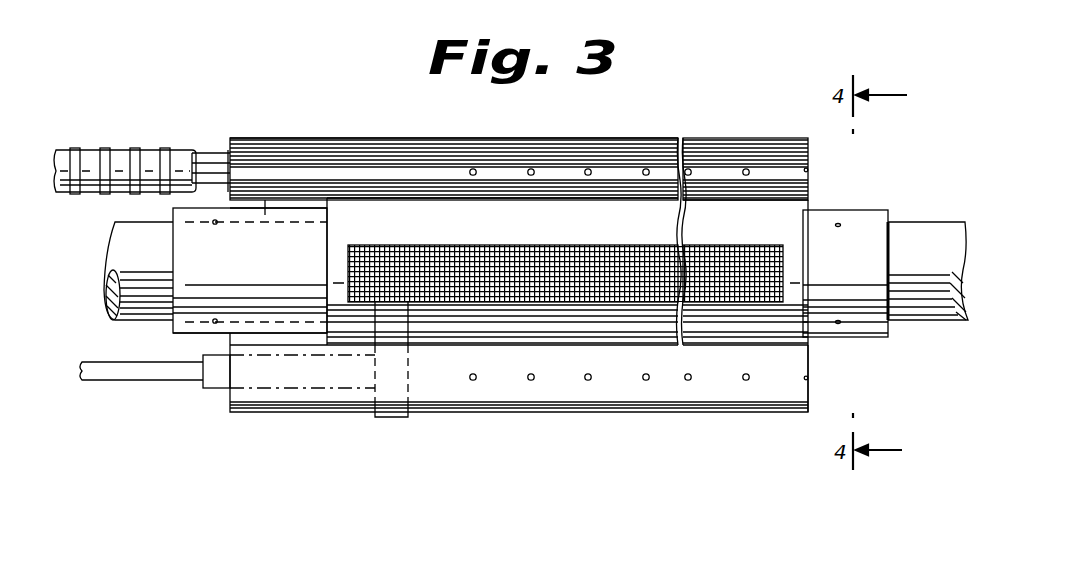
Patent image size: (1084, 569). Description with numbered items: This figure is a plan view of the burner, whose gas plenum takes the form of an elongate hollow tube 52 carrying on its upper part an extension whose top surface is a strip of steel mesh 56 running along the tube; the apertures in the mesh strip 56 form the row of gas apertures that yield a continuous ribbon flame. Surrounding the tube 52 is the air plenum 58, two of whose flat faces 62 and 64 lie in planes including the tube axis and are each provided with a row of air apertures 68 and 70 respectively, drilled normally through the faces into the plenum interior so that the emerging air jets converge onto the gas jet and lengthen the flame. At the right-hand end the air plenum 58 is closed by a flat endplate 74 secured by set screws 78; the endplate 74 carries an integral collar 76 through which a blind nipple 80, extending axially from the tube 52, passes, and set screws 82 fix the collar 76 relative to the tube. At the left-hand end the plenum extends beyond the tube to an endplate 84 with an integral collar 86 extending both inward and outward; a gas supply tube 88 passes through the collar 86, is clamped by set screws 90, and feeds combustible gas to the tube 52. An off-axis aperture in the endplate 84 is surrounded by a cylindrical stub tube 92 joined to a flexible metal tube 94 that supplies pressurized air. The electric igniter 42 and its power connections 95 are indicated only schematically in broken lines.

The electric igniter 42 is at (222, 392).
The elongate hollow tube 52 is at (707, 210).
The mesh strip 56 is at (622, 300).
The air plenum 58 is at (642, 138).
The flat face 62 is at (562, 390).
The flat face 64 is at (325, 163).
The air apertures 68 is at (530, 381).
The air apertures 70 is at (530, 169).
The flat endplate 74 is at (810, 362).
The collar 76 is at (863, 217).
The set screws 78 is at (808, 170).
The blind nipple 80 is at (923, 230).
The set screws 82 is at (840, 222).
The endplate 84 is at (230, 150).
The collar 86 is at (265, 215).
The gas supply tube 88 is at (147, 245).
The set screws 90 is at (217, 323).
The cylindrical stub tube 92 is at (200, 148).
The flexible metal tube 94 is at (115, 148).
The power connections 95 is at (103, 382).